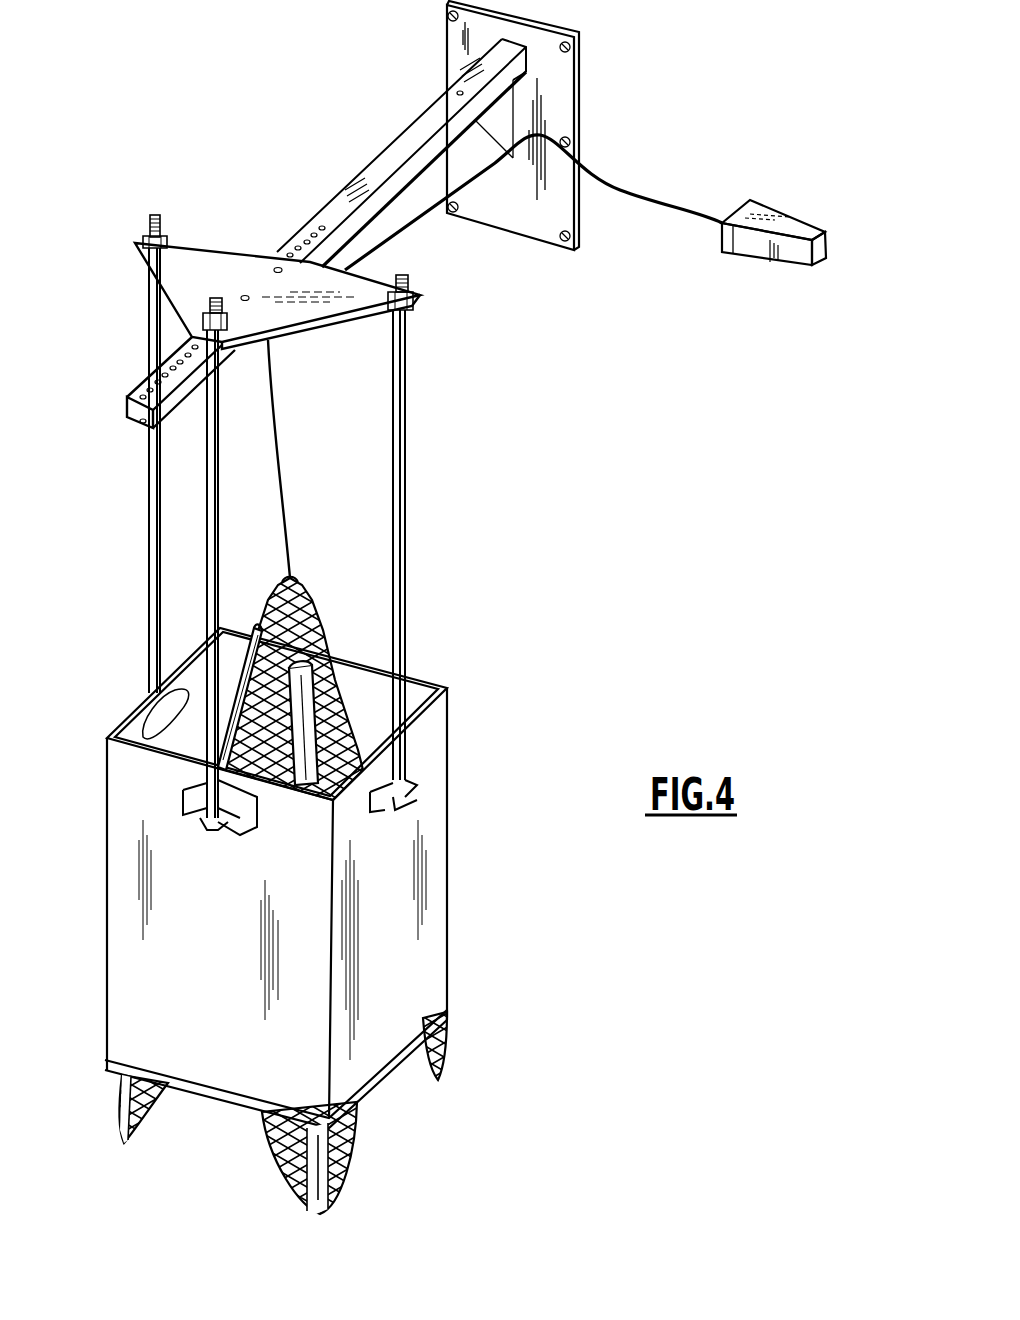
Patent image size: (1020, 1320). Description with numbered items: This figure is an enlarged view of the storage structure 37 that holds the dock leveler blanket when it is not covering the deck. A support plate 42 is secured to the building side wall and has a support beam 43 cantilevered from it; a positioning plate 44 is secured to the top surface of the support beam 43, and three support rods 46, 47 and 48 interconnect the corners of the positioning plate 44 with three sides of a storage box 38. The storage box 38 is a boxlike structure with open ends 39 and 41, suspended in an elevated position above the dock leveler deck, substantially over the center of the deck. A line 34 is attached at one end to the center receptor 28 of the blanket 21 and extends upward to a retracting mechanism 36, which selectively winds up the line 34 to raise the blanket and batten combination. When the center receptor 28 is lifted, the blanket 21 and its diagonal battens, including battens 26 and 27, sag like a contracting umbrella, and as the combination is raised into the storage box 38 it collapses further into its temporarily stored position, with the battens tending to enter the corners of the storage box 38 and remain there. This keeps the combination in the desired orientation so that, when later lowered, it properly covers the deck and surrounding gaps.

The blanket 21 is at (322, 637).
The batten 26 is at (310, 752).
The batten 27 is at (237, 690).
The center receptor 28 is at (296, 578).
The line 34 is at (287, 472).
The retracting mechanism 36 is at (798, 222).
The storage structure 37 is at (612, 455).
The storage box 38 is at (225, 982).
The open end 39 is at (220, 1128).
The open end 41 is at (378, 698).
The support plate 42 is at (556, 103).
The support beam 43 is at (388, 162).
The positioning plate 44 is at (231, 289).
The support rod 46 is at (150, 530).
The support rod 47 is at (215, 482).
The support rod 48 is at (395, 405).